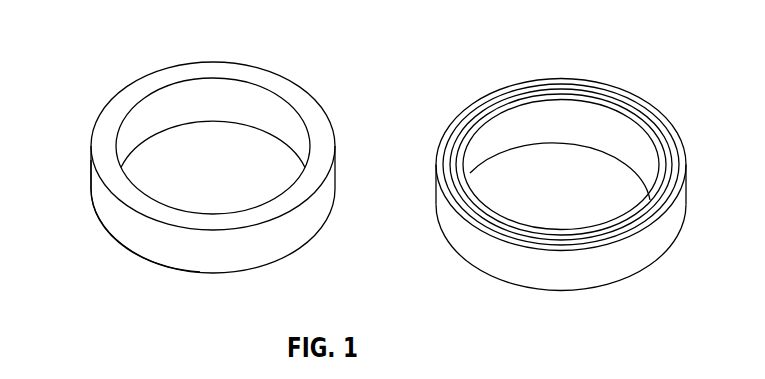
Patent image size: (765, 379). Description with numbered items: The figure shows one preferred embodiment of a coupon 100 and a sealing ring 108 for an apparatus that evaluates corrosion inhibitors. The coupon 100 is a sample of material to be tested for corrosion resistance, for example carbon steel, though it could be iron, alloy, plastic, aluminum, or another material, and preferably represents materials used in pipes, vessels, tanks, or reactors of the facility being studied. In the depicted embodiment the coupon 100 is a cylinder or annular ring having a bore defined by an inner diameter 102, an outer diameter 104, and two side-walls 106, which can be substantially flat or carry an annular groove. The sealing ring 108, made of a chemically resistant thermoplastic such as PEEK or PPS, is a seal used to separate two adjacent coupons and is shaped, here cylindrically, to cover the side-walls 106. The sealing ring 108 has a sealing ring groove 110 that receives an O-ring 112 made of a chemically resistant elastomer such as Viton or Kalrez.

The coupon 100 is at (130, 66).
The inner diameter 102 is at (275, 117).
The outer diameter 104 is at (110, 218).
The side-walls 106 is at (207, 73).
The sealing ring 108 is at (486, 64).
The sealing ring groove 110 is at (657, 125).
The O-ring 112 is at (572, 97).